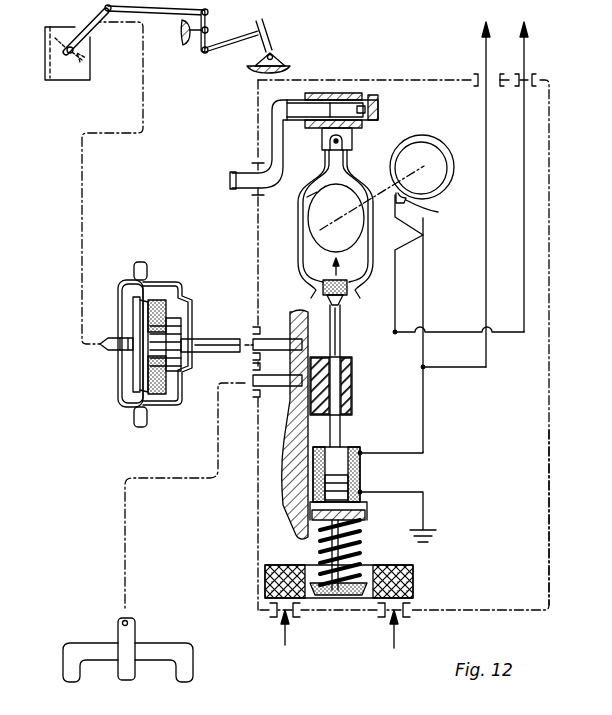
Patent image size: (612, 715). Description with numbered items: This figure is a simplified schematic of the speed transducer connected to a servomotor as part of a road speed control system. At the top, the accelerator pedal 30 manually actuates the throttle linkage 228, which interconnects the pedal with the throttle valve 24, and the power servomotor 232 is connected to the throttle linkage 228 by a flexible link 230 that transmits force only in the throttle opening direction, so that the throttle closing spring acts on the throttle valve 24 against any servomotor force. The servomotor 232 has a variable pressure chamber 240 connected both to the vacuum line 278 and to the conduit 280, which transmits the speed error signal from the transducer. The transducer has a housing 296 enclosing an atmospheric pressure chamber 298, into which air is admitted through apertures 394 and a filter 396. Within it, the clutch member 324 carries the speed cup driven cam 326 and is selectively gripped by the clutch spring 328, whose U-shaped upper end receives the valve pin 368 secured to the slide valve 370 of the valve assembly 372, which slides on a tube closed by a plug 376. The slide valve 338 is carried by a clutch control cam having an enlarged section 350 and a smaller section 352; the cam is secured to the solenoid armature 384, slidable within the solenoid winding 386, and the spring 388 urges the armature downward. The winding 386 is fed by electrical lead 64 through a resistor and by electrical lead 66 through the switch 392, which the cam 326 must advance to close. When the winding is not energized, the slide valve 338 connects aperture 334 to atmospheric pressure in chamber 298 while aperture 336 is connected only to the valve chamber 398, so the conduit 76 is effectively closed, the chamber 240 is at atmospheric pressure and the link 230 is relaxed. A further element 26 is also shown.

The throttle valve 24 is at (82, 70).
The wheel cylinder yoke 26 is at (160, 647).
The accelerator pedal 30 is at (262, 22).
The electrical lead 64 is at (486, 125).
The electrical lead 66 is at (524, 192).
The conduit 76 is at (125, 572).
The throttle linkage 228 is at (163, 12).
The flexible link 230 is at (82, 222).
The power servomotor 232 is at (125, 280).
The variable pressure chamber 240 is at (172, 297).
The vacuum line 278 is at (218, 340).
The conduit 280 is at (233, 176).
The transducer housing 296 is at (549, 240).
The atmospheric pressure chamber 298 is at (539, 508).
The clutch member 324 is at (318, 207).
The speed cup driven cam 326 is at (408, 200).
The clutch spring 328 is at (298, 254).
The valve plate aperture 334 is at (274, 338).
The valve plate aperture 336 is at (256, 378).
The slide valve 338 is at (352, 382).
The enlarged section 350 is at (345, 296).
The smaller section 352 is at (342, 332).
The valve pin 368 is at (330, 143).
The slide valve 370 is at (357, 93).
The valve assembly 372 is at (366, 96).
The plug 376 is at (380, 120).
The solenoid armature 384 is at (362, 492).
The solenoid winding 386 is at (358, 456).
The spring 388 is at (360, 546).
The switch 392 is at (426, 238).
The apertures 394 is at (306, 628).
The filter 396 is at (414, 582).
The valve chamber 398 is at (292, 405).